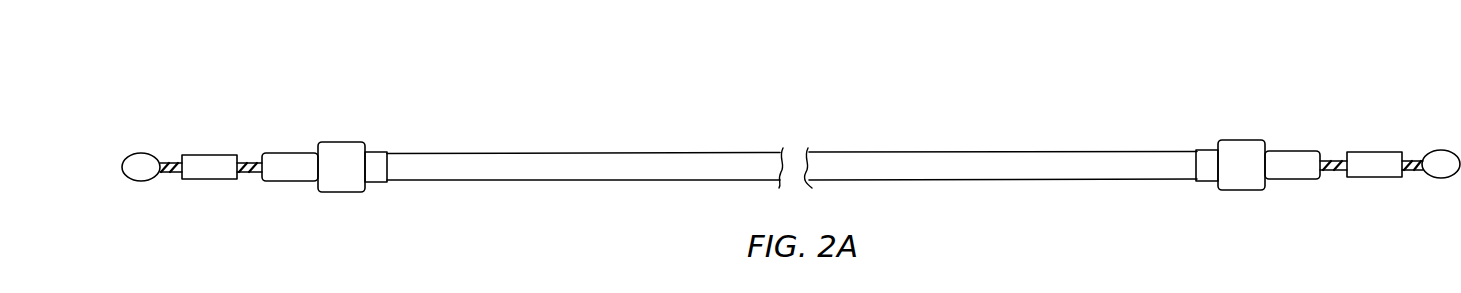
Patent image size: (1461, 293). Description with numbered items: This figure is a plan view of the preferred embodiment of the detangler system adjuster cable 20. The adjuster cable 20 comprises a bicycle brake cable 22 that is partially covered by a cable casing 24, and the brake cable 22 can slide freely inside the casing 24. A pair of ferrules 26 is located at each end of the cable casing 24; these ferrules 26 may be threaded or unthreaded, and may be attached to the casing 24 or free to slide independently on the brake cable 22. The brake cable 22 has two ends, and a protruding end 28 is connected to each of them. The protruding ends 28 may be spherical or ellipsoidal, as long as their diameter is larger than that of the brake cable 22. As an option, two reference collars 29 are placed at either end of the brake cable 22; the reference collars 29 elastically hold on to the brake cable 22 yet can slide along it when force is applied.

The adjuster cable 20 is at (778, 110).
The bicycle brake cable 22 is at (172, 173).
The cable casing 24 is at (417, 162).
The ferrules 26 is at (340, 151).
The protruding end 28 is at (141, 162).
The reference collars 29 is at (222, 177).